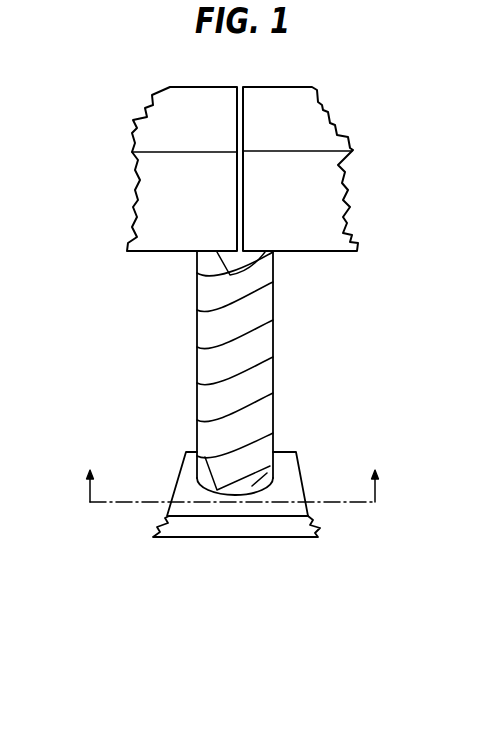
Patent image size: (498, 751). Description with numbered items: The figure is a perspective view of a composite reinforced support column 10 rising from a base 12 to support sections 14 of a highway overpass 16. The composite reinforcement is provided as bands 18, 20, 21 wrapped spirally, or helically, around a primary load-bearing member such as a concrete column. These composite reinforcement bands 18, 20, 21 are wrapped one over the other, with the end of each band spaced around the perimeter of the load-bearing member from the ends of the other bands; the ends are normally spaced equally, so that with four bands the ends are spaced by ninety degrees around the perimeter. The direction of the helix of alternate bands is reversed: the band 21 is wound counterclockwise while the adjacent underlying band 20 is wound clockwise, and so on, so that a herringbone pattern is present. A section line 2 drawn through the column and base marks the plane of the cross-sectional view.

The composite reinforced support column 10 is at (231, 373).
The base 12 is at (290, 478).
The sections of highway overpass 14 is at (163, 211).
The highway overpass 16 is at (239, 150).
The composite reinforcement band 18 is at (262, 478).
The composite reinforcement band 20 is at (230, 265).
The composite reinforcement band 21 is at (210, 378).
The section line 2- 2 is at (231, 471).